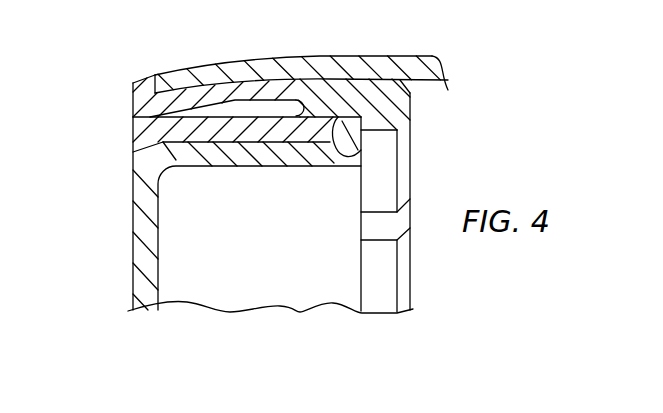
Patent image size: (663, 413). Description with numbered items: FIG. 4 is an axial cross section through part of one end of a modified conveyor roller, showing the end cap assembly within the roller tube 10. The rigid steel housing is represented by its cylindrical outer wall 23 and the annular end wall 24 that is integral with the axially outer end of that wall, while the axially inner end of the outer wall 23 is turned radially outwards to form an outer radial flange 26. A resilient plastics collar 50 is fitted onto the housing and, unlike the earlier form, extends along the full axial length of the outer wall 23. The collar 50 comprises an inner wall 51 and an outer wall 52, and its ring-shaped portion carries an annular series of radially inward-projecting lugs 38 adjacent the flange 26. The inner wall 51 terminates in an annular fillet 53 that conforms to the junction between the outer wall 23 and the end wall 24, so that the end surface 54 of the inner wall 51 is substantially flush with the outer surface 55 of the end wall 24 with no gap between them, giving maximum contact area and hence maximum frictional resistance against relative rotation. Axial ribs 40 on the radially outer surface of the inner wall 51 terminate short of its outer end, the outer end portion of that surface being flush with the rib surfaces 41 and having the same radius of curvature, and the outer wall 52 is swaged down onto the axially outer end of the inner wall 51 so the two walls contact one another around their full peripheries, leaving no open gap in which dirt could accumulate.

The roller tube 10 is at (363, 56).
The cylindrical outer wall 23 is at (280, 160).
The annular end wall 24 is at (159, 245).
The outer radial flange 26 is at (343, 153).
The lugs 38 is at (412, 103).
The axial ribs 40 is at (263, 108).
The radially outer surfaces of the ribs 41 is at (212, 100).
The collar 50 is at (133, 102).
The inner wall 51 is at (220, 136).
The outer wall 52 is at (288, 88).
The annular fillet 53 is at (137, 149).
The end surface 54 is at (133, 131).
The outer surface 55 is at (133, 223).